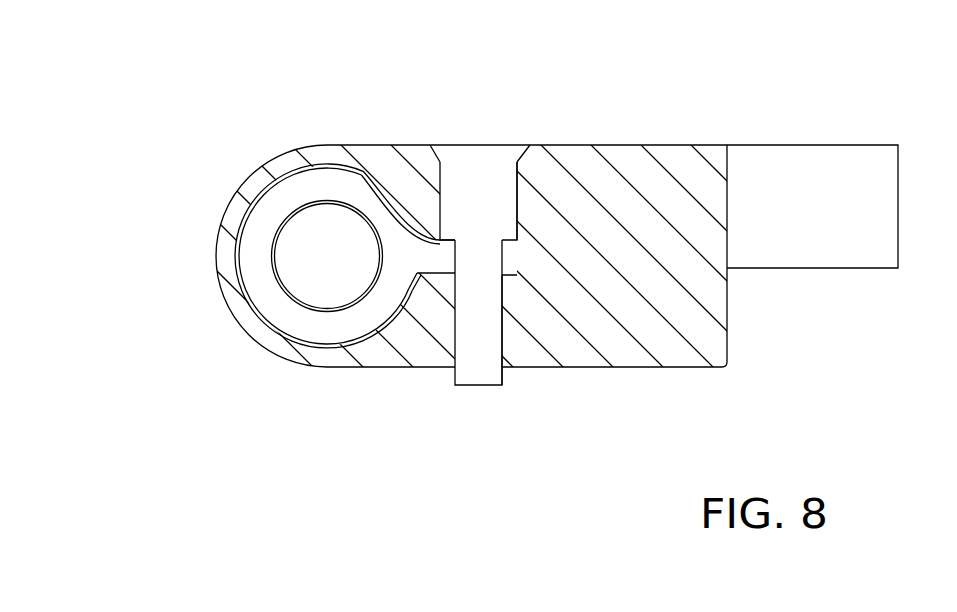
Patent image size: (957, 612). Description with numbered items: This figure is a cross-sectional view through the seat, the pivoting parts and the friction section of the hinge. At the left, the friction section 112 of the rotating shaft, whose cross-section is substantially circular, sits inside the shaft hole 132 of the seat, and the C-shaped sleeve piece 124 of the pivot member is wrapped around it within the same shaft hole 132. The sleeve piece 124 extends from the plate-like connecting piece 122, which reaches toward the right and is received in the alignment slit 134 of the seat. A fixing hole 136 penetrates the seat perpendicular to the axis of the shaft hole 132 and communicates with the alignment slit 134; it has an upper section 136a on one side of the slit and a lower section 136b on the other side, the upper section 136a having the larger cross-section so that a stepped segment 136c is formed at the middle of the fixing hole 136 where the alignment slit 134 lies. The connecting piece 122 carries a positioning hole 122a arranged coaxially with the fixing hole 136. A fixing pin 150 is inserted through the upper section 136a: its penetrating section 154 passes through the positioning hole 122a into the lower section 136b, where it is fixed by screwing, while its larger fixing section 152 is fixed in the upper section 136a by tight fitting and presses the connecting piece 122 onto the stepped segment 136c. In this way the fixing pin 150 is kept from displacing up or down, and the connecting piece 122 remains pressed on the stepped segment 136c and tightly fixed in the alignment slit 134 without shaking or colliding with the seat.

The friction section 112 is at (346, 270).
The connecting piece 122 is at (507, 262).
The positioning hole 122a is at (439, 250).
The sleeve piece 124 is at (257, 258).
The shaft hole 132 is at (241, 206).
The alignment slit 134 is at (440, 288).
The fixing hole 136 is at (477, 249).
The upper section 136a is at (508, 168).
The lower section 136b is at (494, 331).
The stepped segment 136c is at (450, 226).
The fixing pin 150 is at (543, 256).
The fixing section 152 is at (485, 170).
The penetrating section 154 is at (497, 375).